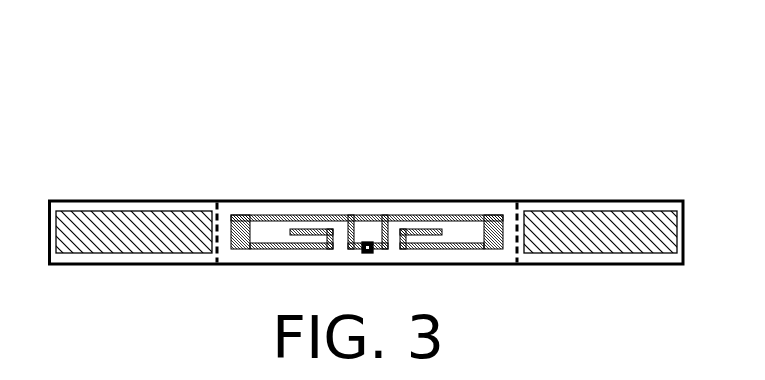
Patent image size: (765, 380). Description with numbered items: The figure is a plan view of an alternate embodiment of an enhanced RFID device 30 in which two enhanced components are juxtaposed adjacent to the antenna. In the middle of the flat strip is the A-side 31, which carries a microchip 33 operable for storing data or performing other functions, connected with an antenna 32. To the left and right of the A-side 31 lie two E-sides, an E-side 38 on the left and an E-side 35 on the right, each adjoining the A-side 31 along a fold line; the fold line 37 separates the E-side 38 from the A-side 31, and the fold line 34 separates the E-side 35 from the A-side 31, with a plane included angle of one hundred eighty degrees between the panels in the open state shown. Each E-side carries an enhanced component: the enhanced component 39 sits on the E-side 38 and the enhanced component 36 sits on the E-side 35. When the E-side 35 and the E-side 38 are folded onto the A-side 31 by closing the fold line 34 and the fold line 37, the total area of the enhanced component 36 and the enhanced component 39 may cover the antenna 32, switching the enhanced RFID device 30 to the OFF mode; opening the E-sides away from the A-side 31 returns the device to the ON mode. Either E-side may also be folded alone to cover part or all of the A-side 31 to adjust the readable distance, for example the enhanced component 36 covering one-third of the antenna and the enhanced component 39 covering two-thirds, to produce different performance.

The enhanced RFID device 30 is at (92, 135).
The A-side 31 is at (430, 208).
The antenna 32 is at (288, 218).
The microchip 33 is at (368, 242).
The fold line 34 is at (518, 208).
The E-side 35 is at (583, 208).
The enhanced component 36 is at (635, 222).
The fold line 37 is at (218, 214).
The E-side 38 is at (158, 216).
The enhanced component 39 is at (103, 218).